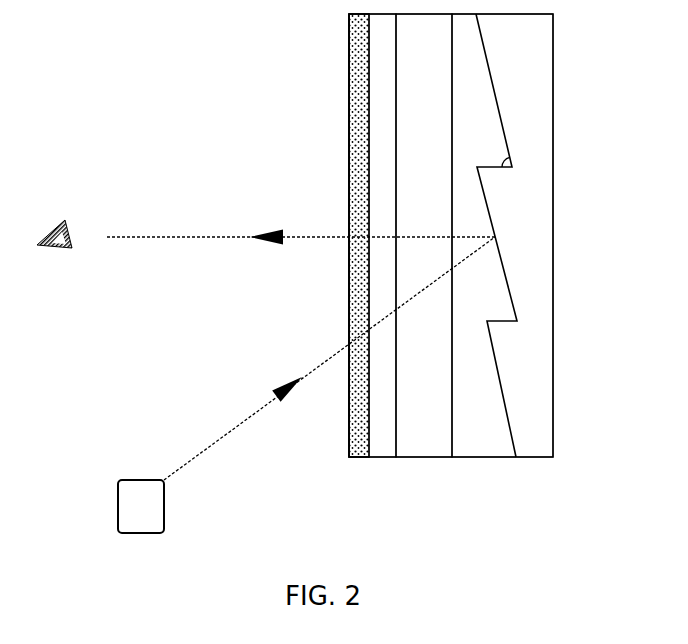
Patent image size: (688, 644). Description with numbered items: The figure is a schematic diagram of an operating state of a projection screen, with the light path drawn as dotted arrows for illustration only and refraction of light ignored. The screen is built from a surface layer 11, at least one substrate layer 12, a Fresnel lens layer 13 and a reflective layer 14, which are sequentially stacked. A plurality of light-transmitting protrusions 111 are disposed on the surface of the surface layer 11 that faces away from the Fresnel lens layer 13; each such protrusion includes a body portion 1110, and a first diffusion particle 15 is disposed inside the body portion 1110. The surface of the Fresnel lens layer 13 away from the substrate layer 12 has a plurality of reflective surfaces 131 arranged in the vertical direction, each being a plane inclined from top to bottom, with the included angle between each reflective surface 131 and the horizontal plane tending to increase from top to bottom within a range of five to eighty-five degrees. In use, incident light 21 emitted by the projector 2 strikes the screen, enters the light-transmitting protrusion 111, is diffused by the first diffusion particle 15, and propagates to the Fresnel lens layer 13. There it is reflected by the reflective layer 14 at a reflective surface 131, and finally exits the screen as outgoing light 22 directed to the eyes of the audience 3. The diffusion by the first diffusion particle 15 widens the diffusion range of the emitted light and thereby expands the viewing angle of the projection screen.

The projector 2 is at (116, 480).
The audience 3 is at (62, 212).
The surface layer 11 is at (380, 445).
The light-transmitting protrusions 111 is at (352, 197).
The body portion 1110 is at (359, 235).
The substrate layer 12 is at (425, 433).
The Fresnel lens layer 13 is at (480, 442).
The reflective surface 131 is at (497, 93).
The reflective layer 14 is at (537, 392).
The first diffusion particle 15 is at (348, 273).
The incident light 21 is at (232, 420).
The outgoing light 22 is at (232, 238).